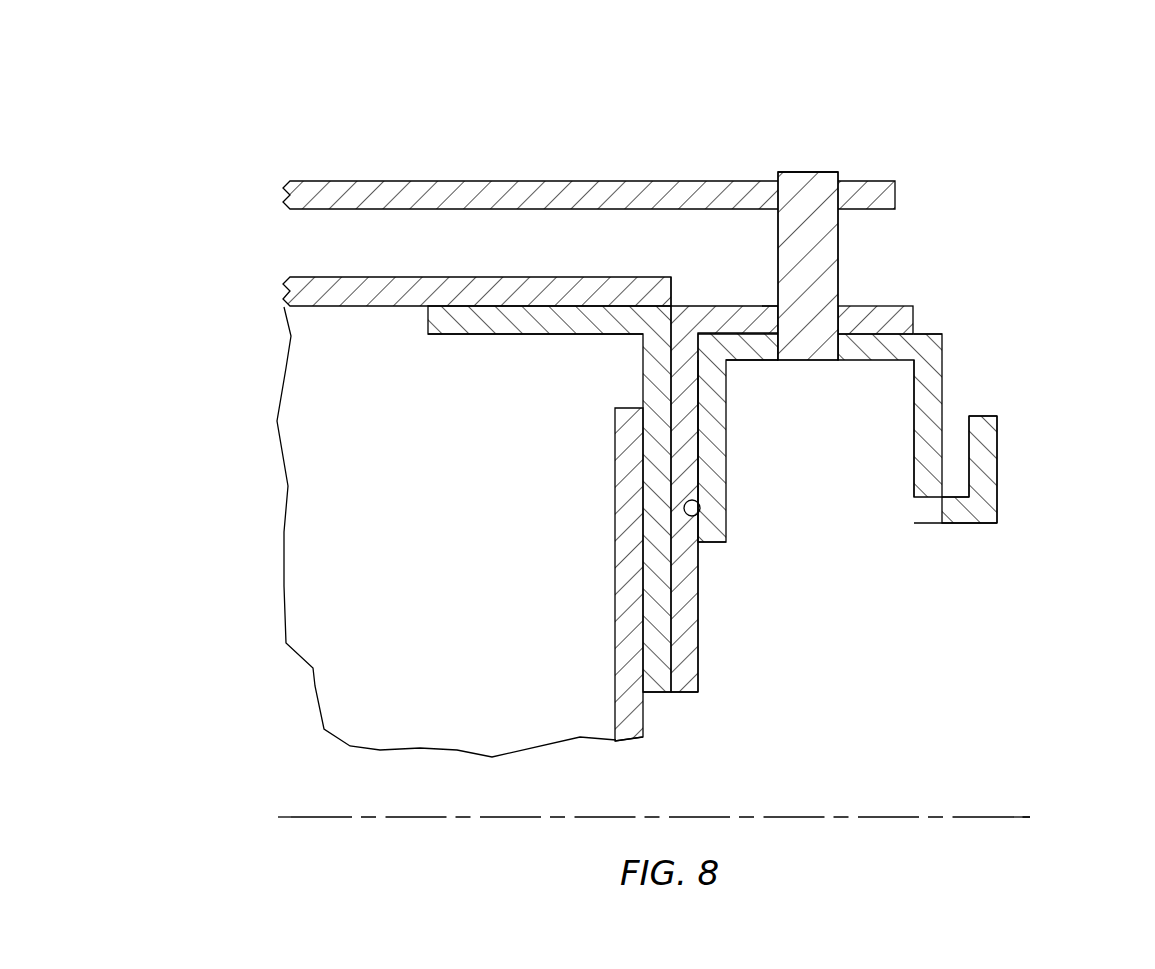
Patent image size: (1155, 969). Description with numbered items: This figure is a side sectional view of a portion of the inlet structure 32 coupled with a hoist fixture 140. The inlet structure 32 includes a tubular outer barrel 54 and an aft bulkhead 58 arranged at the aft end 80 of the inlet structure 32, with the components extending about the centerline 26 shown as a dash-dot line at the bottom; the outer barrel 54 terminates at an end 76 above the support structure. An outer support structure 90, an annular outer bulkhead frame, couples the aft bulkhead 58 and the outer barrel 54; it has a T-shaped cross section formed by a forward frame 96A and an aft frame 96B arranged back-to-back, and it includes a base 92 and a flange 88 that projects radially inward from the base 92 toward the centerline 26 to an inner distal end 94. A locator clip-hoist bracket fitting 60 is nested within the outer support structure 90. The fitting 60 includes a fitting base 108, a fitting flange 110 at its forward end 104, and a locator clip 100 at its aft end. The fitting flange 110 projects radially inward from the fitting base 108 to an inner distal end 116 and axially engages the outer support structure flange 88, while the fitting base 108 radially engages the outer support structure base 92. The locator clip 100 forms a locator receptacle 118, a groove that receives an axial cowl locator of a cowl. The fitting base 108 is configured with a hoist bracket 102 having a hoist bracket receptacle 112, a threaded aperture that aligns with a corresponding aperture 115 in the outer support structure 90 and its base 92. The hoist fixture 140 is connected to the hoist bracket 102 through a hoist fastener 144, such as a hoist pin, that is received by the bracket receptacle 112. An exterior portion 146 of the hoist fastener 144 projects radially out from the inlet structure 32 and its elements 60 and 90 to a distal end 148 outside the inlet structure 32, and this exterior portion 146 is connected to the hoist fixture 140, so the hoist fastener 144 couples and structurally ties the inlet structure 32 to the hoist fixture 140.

The hoist fixture 140 is at (537, 125).
The hoist fastener 144 is at (817, 158).
The distal end 148 is at (792, 172).
The outer barrel 54 is at (428, 277).
The panel end 76 is at (671, 277).
The inlet structure 32 is at (263, 304).
The outer support structure flange 88 is at (698, 618).
The outer support structure base 92 is at (456, 334).
The outer support structure 90 is at (702, 594).
The forward frame 96A is at (616, 614).
The aft frame 96B is at (698, 664).
The inner distal end 94 is at (684, 693).
The aft bulkhead 58 is at (614, 714).
The aperture 115 is at (775, 320).
The fitting flange 110 is at (728, 455).
The hoist bracket receptacle 112 is at (766, 352).
The forward end 104 is at (699, 511).
The inner distal end 116 is at (712, 543).
The exterior portion 146 is at (840, 313).
The hoist bracket 102 is at (852, 372).
The fitting base 108 is at (930, 325).
The locator receptacle 118 is at (955, 438).
The aft end 80 is at (998, 507).
The locator clip 100 is at (984, 539).
The locator clip-hoist bracket fitting 60 is at (921, 542).
The centerline 26 is at (1012, 816).